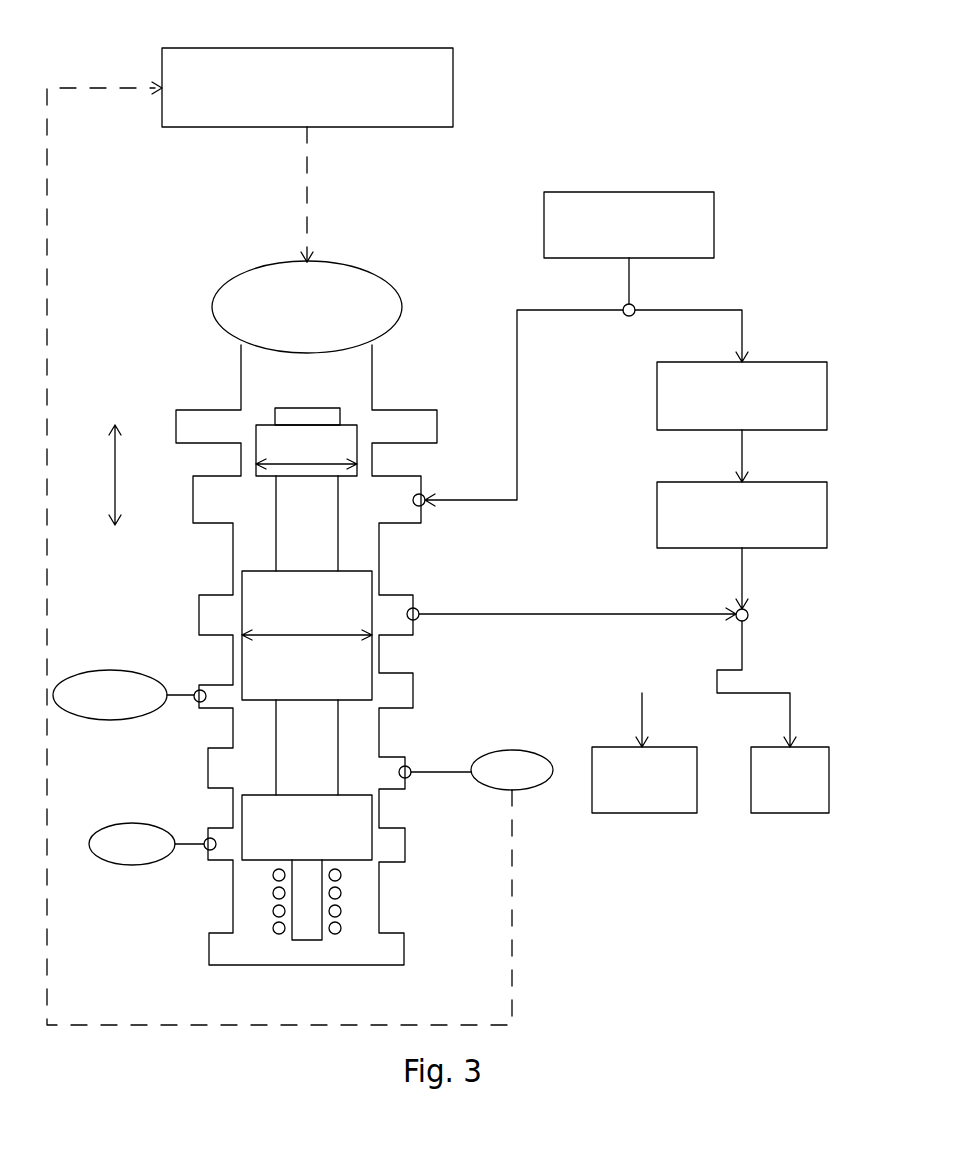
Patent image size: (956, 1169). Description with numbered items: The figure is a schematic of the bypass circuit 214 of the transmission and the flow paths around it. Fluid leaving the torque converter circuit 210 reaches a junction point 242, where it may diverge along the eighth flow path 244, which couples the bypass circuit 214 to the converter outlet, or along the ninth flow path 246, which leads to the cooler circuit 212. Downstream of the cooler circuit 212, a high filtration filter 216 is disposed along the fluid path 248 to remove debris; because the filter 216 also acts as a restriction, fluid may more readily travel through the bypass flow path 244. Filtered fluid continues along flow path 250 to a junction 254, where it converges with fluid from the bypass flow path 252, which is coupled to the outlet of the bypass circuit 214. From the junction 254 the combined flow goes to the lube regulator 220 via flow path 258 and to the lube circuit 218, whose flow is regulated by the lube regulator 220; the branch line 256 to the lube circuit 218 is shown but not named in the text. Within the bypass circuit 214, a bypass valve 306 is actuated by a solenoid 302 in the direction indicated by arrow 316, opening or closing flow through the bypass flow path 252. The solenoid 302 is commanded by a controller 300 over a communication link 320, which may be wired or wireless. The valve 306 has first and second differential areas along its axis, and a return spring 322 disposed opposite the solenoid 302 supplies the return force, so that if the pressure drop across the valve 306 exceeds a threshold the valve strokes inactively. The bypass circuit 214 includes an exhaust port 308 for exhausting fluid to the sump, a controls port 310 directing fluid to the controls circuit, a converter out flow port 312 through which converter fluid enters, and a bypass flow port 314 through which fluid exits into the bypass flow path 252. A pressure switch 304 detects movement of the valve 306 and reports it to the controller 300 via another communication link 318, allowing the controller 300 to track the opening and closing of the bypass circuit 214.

The torque converter circuit 210 is at (628, 192).
The cooler circuit 212 is at (657, 393).
The bypass circuit 214 is at (733, 102).
The high filtration filter 216 is at (657, 520).
The lube circuit 218 is at (645, 813).
The lube regulator 220 is at (790, 813).
The junction point 242 is at (627, 318).
The eighth flow path 244 is at (517, 400).
The ninth flow path 246 is at (745, 337).
The fluid path 248 is at (742, 455).
The flow path 250 is at (742, 580).
The bypass flow path 252 is at (553, 615).
The junction 254 is at (736, 621).
The line to lube 256 is at (770, 693).
The flow path 258 is at (642, 718).
The controller 300 is at (453, 87).
The solenoid 302 is at (233, 280).
The pressure switch 304 is at (480, 787).
The bypass valve 306 is at (307, 940).
The exhaust port 308 is at (135, 866).
The controls port 310 is at (107, 668).
The converter out flow port 312 is at (425, 505).
The bypass flow port 314 is at (418, 619).
The arrow 316 is at (115, 475).
The communication link 318 is at (512, 940).
The communication link 320 is at (307, 193).
The return spring 322 is at (279, 935).